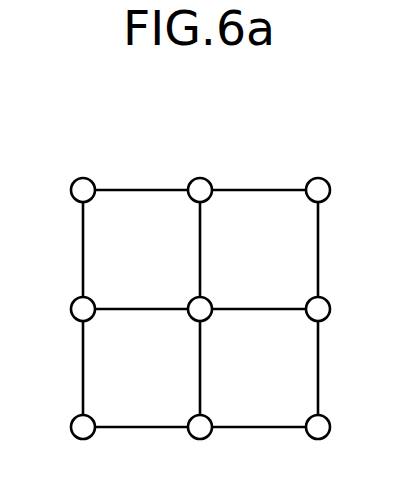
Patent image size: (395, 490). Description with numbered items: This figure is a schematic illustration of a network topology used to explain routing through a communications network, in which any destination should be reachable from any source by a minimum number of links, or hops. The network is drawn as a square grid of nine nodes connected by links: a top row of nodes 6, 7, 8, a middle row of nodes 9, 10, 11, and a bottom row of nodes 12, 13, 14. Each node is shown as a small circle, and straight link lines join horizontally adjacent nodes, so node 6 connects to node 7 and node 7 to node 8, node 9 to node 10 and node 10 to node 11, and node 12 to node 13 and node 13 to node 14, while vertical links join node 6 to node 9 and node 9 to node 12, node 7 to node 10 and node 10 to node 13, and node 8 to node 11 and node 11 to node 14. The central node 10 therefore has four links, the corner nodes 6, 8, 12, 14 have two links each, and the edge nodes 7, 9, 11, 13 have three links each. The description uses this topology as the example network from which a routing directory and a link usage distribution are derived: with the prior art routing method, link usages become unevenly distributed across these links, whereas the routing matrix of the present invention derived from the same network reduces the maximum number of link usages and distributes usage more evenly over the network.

The node 6 is at (83, 178).
The node 7 is at (200, 178).
The node 8 is at (316, 178).
The node 9 is at (75, 298).
The node 10 is at (192, 299).
The node 11 is at (311, 299).
The node 12 is at (76, 417).
The node 13 is at (193, 417).
The node 14 is at (312, 417).